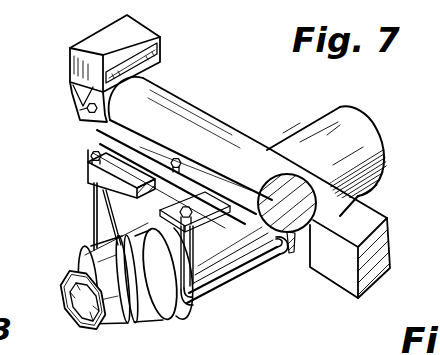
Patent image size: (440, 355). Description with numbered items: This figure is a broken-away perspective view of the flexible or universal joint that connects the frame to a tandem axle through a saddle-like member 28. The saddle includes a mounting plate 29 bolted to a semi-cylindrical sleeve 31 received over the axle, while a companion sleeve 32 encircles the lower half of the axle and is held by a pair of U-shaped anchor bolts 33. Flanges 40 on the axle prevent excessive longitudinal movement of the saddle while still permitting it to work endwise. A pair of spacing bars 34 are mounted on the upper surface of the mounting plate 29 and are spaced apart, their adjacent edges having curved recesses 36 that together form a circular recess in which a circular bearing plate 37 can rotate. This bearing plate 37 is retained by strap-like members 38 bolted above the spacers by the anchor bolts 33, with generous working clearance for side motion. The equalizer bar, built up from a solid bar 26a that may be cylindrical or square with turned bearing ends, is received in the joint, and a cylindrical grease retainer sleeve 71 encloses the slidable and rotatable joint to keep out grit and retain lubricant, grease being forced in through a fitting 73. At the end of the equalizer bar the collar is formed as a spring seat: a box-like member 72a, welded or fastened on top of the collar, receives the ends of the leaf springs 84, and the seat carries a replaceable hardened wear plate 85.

The box-like member 72a is at (102, 38).
The replaceable hardened wear plate 85 is at (160, 51).
The cylindrical grease retainer sleeve 71 is at (180, 113).
The fitting 73 is at (178, 158).
The circular bearing plate 37 is at (166, 199).
The strap-like member 38 is at (92, 152).
The saddle-like member 28 is at (108, 170).
The mounting plate 29 is at (88, 187).
The spacing bar 34 is at (148, 202).
The curved recess 36 is at (80, 252).
The leaf spring 84 is at (88, 326).
The flange 40 is at (156, 310).
The companion sleeve 32 is at (204, 281).
The semi-cylindrical sleeve 31 is at (223, 253).
The U-shaped anchor bolt 33 is at (184, 302).
The solid bar 26a is at (384, 218).